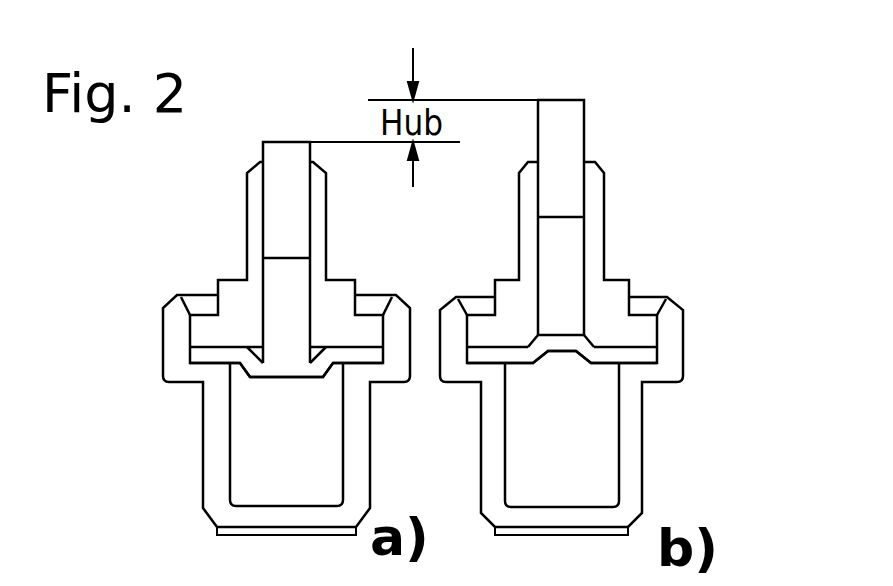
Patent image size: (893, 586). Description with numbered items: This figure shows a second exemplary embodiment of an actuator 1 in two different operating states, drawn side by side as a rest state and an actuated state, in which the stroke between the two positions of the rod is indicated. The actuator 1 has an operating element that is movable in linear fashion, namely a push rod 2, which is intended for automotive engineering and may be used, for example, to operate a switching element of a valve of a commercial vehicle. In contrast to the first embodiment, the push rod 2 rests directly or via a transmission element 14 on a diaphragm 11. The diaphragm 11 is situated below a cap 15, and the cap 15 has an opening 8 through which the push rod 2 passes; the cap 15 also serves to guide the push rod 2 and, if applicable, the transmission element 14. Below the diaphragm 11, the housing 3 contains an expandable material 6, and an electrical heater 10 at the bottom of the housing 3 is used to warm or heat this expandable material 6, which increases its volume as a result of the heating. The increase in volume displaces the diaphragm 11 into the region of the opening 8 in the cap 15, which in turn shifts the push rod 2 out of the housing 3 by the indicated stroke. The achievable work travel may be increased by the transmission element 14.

The actuator 1 is at (340, 268).
The push rod 2 is at (288, 163).
The housing 3 is at (213, 470).
The expandable material 6 is at (248, 412).
The opening 8 is at (587, 300).
The electrical heater 10 is at (265, 531).
The diaphragm 11 is at (212, 355).
The transmission element 14 is at (268, 267).
The cap 15 is at (627, 332).